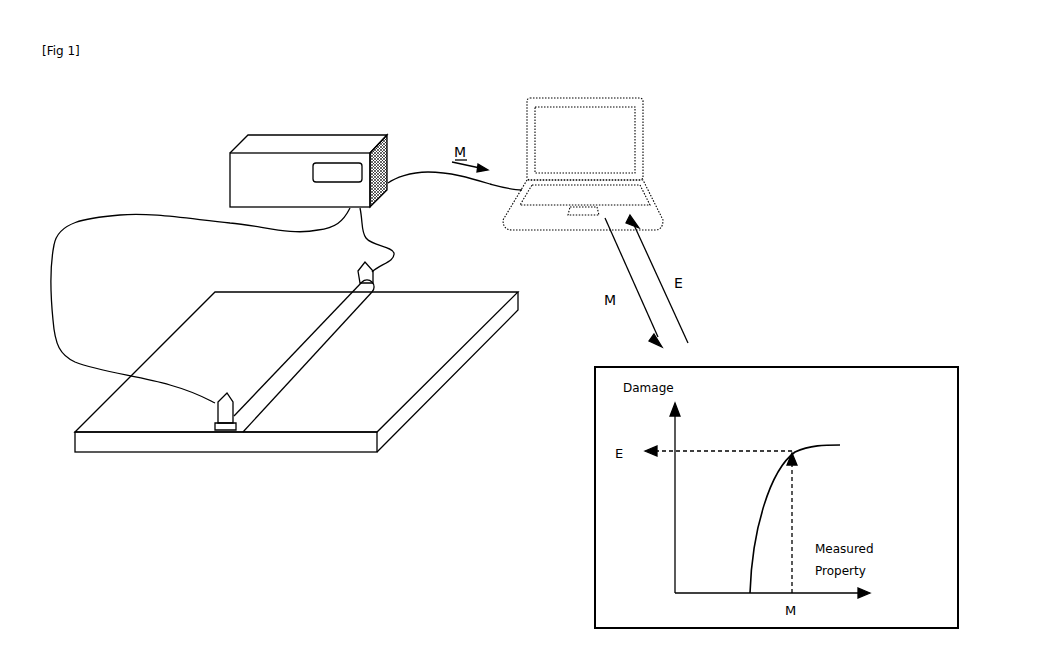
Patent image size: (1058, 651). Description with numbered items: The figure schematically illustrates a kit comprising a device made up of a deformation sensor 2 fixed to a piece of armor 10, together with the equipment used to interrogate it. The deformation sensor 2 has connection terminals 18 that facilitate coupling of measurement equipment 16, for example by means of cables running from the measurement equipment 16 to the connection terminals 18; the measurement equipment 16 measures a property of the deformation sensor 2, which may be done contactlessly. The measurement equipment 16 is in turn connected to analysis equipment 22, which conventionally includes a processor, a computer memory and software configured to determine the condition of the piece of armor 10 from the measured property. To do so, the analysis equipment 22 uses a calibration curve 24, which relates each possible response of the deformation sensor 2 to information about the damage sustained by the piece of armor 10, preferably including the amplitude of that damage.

The deformation sensor 2 is at (303, 350).
The piece of armor 10 is at (512, 308).
The measurement equipment 16 is at (386, 180).
The connection terminals 18 is at (236, 418).
The analysis equipment 22 is at (650, 208).
The calibration curve 24 is at (820, 445).